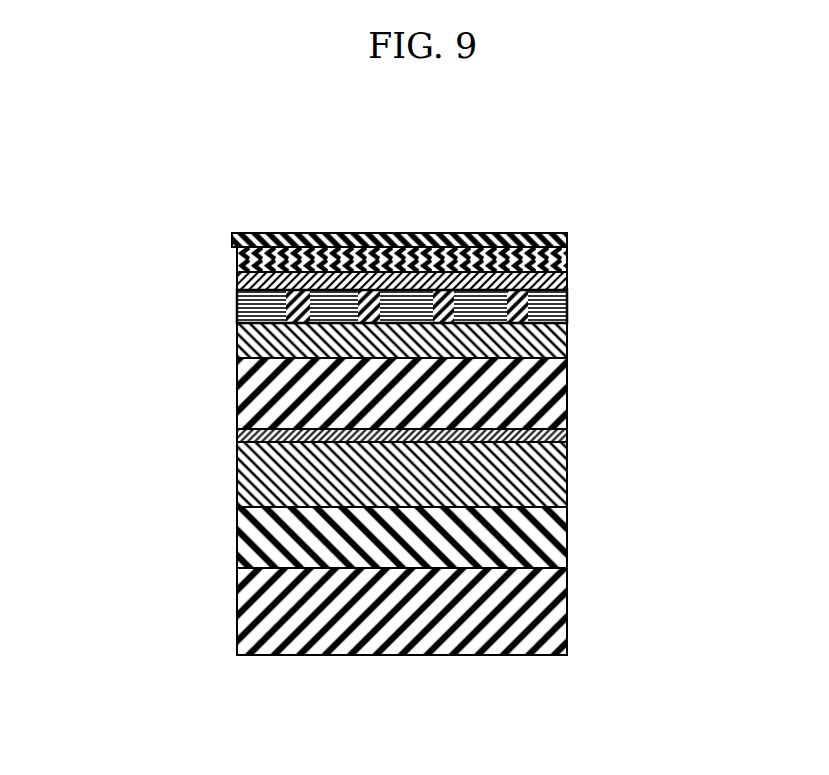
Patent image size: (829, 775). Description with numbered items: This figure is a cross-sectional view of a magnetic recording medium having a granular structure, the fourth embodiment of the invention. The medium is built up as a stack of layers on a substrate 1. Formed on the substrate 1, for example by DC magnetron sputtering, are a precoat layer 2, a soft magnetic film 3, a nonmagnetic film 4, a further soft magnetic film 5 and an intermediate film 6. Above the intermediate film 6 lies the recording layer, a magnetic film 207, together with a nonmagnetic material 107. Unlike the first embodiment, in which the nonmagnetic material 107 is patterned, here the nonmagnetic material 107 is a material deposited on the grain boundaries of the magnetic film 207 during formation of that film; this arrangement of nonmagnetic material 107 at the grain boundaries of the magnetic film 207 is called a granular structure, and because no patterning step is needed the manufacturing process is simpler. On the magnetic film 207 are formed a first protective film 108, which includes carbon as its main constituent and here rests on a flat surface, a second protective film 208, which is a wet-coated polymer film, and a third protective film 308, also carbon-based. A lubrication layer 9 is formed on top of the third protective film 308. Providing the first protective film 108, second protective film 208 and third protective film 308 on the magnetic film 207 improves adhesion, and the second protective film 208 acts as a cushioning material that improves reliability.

The substrate 1 is at (565, 585).
The precoat layer 2 is at (563, 532).
The soft magnetic film 3 is at (450, 488).
The nonmagnetic film 4 is at (567, 433).
The soft magnetic film 5 is at (567, 396).
The intermediate film 6 is at (567, 345).
The lubrication layer 9 is at (567, 232).
The nonmagnetic material 107 is at (237, 308).
The first protective film 108 is at (567, 283).
The magnetic film 207 is at (373, 237).
The second protective film 208 is at (457, 237).
The third protective film 308 is at (567, 250).